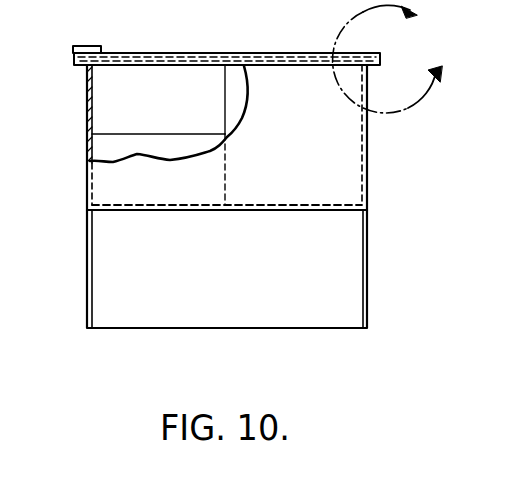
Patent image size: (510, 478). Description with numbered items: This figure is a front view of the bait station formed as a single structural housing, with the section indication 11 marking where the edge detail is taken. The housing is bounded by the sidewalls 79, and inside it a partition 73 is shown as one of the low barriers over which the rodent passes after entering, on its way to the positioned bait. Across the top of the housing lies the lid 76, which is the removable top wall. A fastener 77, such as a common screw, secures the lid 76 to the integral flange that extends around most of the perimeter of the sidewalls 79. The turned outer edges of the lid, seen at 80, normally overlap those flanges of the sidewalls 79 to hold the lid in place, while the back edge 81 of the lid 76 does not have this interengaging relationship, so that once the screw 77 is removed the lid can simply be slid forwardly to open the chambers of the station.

The partition 73 is at (176, 98).
The lid 76 is at (188, 53).
The fastener 77 is at (86, 46).
The housing sidewalls 79 is at (345, 274).
The turned outer edges of the lid 80 is at (80, 66).
The back edge of the lid 81 is at (293, 63).
The section line 11- 11 is at (404, 58).